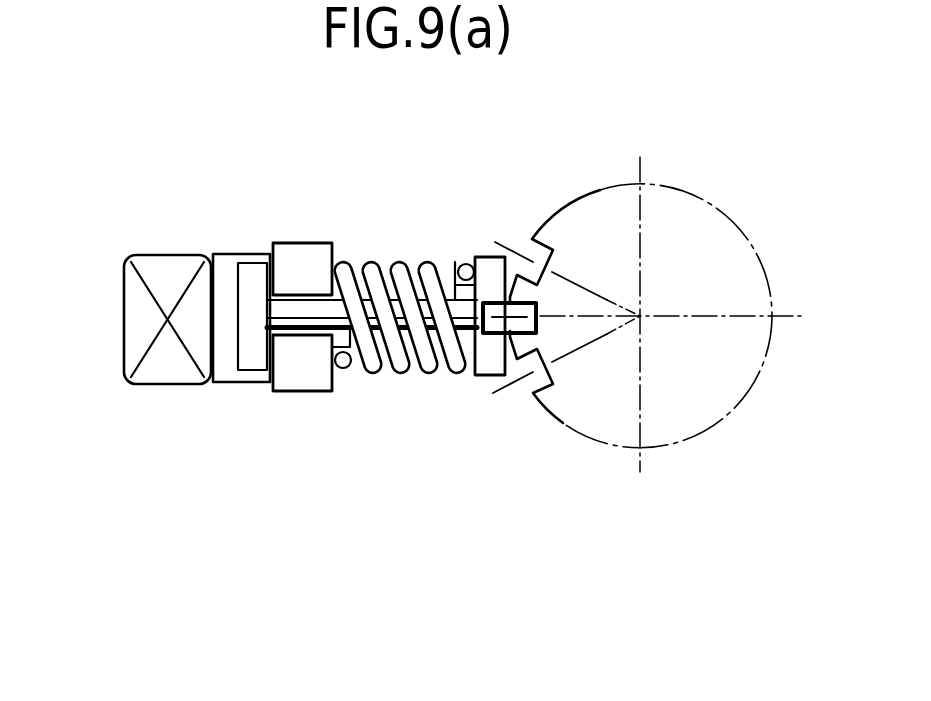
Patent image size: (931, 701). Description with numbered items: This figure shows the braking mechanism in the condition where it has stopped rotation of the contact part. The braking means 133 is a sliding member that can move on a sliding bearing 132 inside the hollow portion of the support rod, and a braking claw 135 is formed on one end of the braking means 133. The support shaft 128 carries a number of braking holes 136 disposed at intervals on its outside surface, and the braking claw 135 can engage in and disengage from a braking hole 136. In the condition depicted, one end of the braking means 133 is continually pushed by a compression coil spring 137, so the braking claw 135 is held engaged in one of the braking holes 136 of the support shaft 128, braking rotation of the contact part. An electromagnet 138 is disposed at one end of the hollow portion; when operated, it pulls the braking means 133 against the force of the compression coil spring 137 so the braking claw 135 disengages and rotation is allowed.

The support shaft 128 is at (668, 183).
The sliding bearing 132 is at (302, 248).
The braking means 133 is at (255, 362).
The braking claw 135 is at (493, 334).
The braking holes 136 is at (533, 247).
The compression coil spring 137 is at (382, 362).
The electromagnet 138 is at (165, 262).